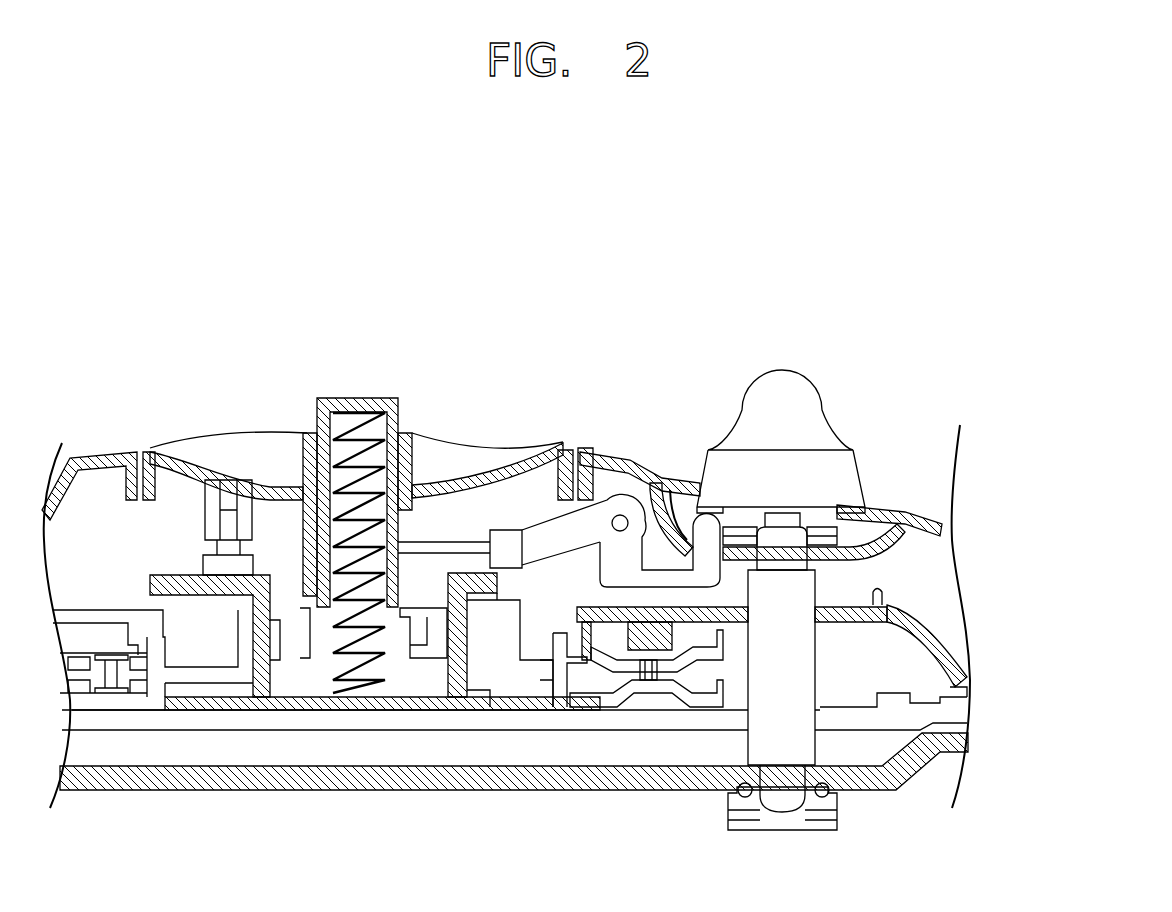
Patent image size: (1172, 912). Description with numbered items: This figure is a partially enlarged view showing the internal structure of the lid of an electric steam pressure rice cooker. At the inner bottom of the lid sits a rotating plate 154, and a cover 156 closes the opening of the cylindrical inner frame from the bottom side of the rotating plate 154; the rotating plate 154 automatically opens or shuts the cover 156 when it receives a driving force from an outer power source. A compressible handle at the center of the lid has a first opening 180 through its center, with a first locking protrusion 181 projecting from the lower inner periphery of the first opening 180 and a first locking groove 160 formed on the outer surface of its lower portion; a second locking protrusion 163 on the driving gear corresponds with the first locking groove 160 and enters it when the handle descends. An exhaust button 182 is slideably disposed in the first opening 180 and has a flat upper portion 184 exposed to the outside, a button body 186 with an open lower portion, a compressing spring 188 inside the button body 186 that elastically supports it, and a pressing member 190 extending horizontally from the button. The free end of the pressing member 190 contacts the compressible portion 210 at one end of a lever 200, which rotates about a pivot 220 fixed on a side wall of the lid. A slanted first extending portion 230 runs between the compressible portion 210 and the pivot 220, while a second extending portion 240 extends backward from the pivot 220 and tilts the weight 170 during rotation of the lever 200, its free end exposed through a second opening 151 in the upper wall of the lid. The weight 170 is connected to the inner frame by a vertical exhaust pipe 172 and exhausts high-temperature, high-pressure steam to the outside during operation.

The second opening 151 is at (690, 530).
The rotating plate 154 is at (842, 722).
The cover 156 is at (372, 786).
The first locking groove 160 is at (290, 590).
The second locking protrusion 163 is at (200, 445).
The weight 170 is at (782, 407).
The exhaust pipe 172 is at (790, 598).
The first opening 180 is at (309, 505).
The first locking protrusion 181 is at (297, 470).
The exhaust button 182 is at (380, 398).
The flat upper portion 184 is at (360, 397).
The button body 186 is at (402, 432).
The compressing spring 188 is at (416, 438).
The pressing member 190 is at (443, 543).
The lever 200 is at (615, 490).
The compressible portion 210 is at (503, 543).
The pivot 220 is at (618, 532).
The first extending portion 230 is at (557, 543).
The second extending portion 240 is at (660, 585).